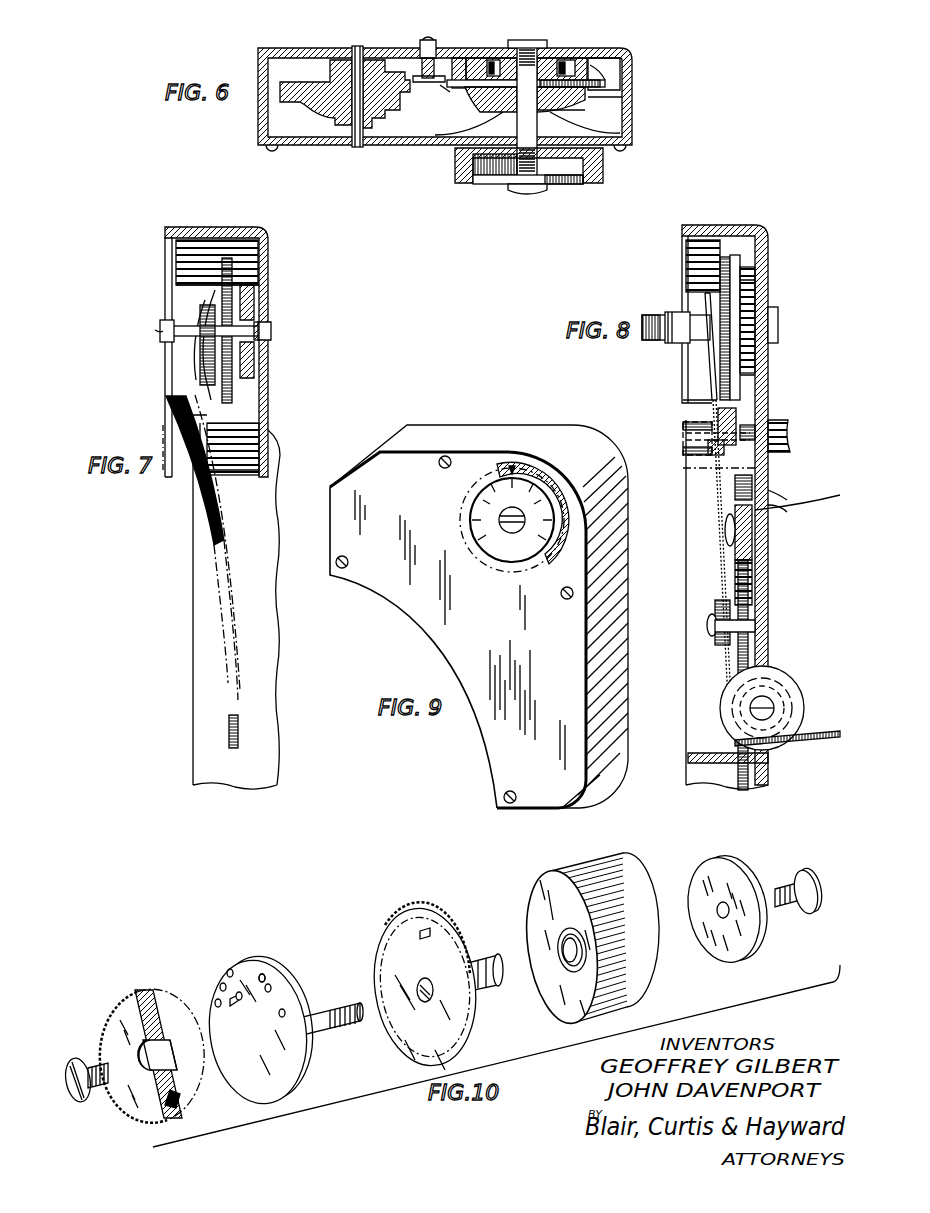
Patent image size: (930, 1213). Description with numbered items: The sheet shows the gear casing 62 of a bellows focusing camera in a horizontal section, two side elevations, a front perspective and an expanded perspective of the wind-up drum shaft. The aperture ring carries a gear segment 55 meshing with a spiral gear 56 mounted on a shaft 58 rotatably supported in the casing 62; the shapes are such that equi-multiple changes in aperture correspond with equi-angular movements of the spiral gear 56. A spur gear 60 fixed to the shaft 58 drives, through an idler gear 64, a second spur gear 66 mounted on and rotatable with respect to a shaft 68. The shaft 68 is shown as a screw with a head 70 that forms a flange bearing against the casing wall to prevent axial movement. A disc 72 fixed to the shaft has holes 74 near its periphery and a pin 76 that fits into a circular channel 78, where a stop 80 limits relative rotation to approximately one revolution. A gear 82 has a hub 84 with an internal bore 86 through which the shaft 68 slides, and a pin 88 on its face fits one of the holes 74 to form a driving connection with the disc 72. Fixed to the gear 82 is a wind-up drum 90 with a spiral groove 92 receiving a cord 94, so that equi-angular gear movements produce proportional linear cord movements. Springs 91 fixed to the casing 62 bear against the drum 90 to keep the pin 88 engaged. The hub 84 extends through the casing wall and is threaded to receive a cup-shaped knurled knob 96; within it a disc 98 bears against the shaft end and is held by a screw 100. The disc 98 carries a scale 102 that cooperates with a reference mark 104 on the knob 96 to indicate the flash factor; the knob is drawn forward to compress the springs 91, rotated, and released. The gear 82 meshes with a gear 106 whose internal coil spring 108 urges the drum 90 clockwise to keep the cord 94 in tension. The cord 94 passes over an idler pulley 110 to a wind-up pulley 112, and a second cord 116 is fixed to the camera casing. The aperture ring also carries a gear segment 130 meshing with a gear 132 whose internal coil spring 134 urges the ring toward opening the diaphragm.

In FIG. 7, the gear segment 55 is at (233, 635).
In FIG. 6, the spiral gear 56 is at (300, 85).
In FIG. 7, the spiral gear 56 is at (227, 270).
In FIG. 6, the shaft 58 is at (360, 48).
In FIG. 7, the shaft 58 is at (160, 331).
In FIG. 6, the spur gear 60 is at (345, 58).
In FIG. 7, the spur gear 60 is at (253, 349).
In FIG. 6, the gear casing 62 is at (270, 50).
In FIG. 7, the gear casing 62 is at (262, 232).
In FIG. 8, the gear casing 62 is at (760, 430).
In FIG. 9, the gear casing 62 is at (476, 425).
In FIG. 6, the idler gear 64 is at (437, 62).
In FIG. 7, the idler gear 64 is at (250, 298).
In FIG. 6, the second spur gear 66 is at (590, 62).
In FIG. 6, the shaft 68 is at (530, 48).
In FIG. 8, the shaft 68 is at (650, 316).
In FIG. 10, the shaft 68 is at (100, 1068).
In FIG. 10, the head 70 is at (78, 1060).
In FIG. 6, the disc 72 is at (608, 70).
In FIG. 10, the disc 72 is at (250, 957).
In FIG. 6, the holes 74 is at (460, 80).
In FIG. 10, the holes 74 is at (265, 975).
In FIG. 6, the pin 76 is at (496, 62).
In FIG. 10, the pin 76 is at (239, 992).
In FIG. 6, the circular channel 78 is at (490, 60).
In FIG. 10, the circular channel 78 is at (150, 1020).
In FIG. 6, the stop 80 is at (568, 62).
In FIG. 10, the stop 80 is at (178, 1097).
In FIG. 6, the gear 82 is at (606, 84).
In FIG. 8, the gear 82 is at (735, 258).
In FIG. 10, the gear 82 is at (448, 935).
In FIG. 6, the hub 84 is at (585, 140).
In FIG. 8, the hub 84 is at (676, 343).
In FIG. 10, the hub 84 is at (472, 965).
In FIG. 10, the internal bore 86 is at (421, 998).
In FIG. 6, the pin 88 is at (455, 92).
In FIG. 10, the pin 88 is at (426, 930).
In FIG. 6, the wind-up drum 90 is at (490, 102).
In FIG. 8, the wind-up drum 90 is at (724, 260).
In FIG. 6, the springs 91 is at (470, 128).
In FIG. 6, the spiral groove 92 is at (622, 96).
In FIG. 8, the cord 94 is at (720, 462).
In FIG. 6, the knurled knob 96 is at (603, 177).
In FIG. 9, the knurled knob 96 is at (492, 568).
In FIG. 10, the knurled knob 96 is at (612, 873).
In FIG. 6, the disc 98 is at (572, 186).
In FIG. 9, the disc 98 is at (522, 555).
In FIG. 10, the disc 98 is at (745, 875).
In FIG. 6, the screw 100 is at (530, 192).
In FIG. 9, the screw 100 is at (500, 522).
In FIG. 10, the screw 100 is at (810, 878).
In FIG. 9, the scale 102 is at (478, 500).
In FIG. 9, the reference mark 104 is at (512, 466).
In FIG. 8, the gear 106 is at (712, 447).
In FIG. 8, the internal coil spring 108 is at (737, 418).
In FIG. 8, the idler pulley 110 is at (718, 640).
In FIG. 8, the wind-up pulley 112 is at (782, 688).
In FIG. 8, the second cord 116 is at (797, 737).
In FIG. 8, the gear segment 130 is at (748, 598).
In FIG. 8, the gear 132 is at (752, 490).
In FIG. 8, the internal coil spring 134 is at (752, 520).